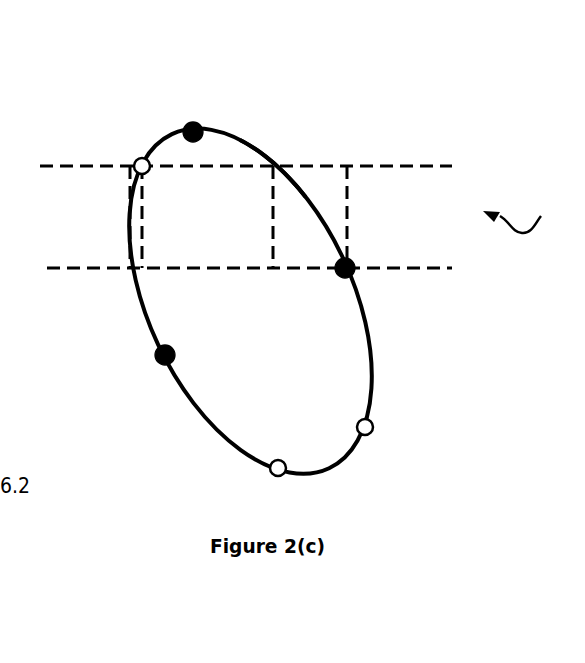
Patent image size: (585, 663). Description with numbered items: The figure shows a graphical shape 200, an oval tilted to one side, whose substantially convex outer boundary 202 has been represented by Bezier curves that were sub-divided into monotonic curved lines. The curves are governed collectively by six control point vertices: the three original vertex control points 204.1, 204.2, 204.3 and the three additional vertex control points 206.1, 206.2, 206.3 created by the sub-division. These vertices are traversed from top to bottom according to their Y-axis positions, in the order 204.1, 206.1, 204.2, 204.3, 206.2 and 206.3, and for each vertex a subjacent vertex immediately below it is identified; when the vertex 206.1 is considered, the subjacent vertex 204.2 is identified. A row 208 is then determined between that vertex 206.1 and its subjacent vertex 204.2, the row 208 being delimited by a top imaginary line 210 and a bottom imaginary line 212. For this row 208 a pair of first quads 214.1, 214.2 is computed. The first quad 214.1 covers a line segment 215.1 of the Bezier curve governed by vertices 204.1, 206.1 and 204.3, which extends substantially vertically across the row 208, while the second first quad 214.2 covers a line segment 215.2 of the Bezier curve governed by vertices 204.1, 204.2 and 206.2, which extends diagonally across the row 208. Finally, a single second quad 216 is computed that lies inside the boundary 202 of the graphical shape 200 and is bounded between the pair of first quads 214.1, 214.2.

The graphical shape 200 is at (143, 312).
The outer boundary 202 is at (265, 150).
The vertex control point 204.1 is at (200, 122).
The vertex control point 204.2 is at (352, 275).
The vertex control point 204.3 is at (160, 366).
The additional vertex control point 206.1 is at (134, 159).
The additional vertex control point 206.2 is at (374, 434).
The additional vertex control point 206.3 is at (266, 473).
The row 208 is at (526, 218).
The top imaginary line 210 is at (403, 165).
The bottom imaginary line 212 is at (424, 269).
The first quad 214.1 is at (129, 222).
The first quad 214.2 is at (347, 213).
The line segment 215.1 is at (129, 180).
The line segment 215.2 is at (300, 188).
The second quad 216 is at (227, 227).